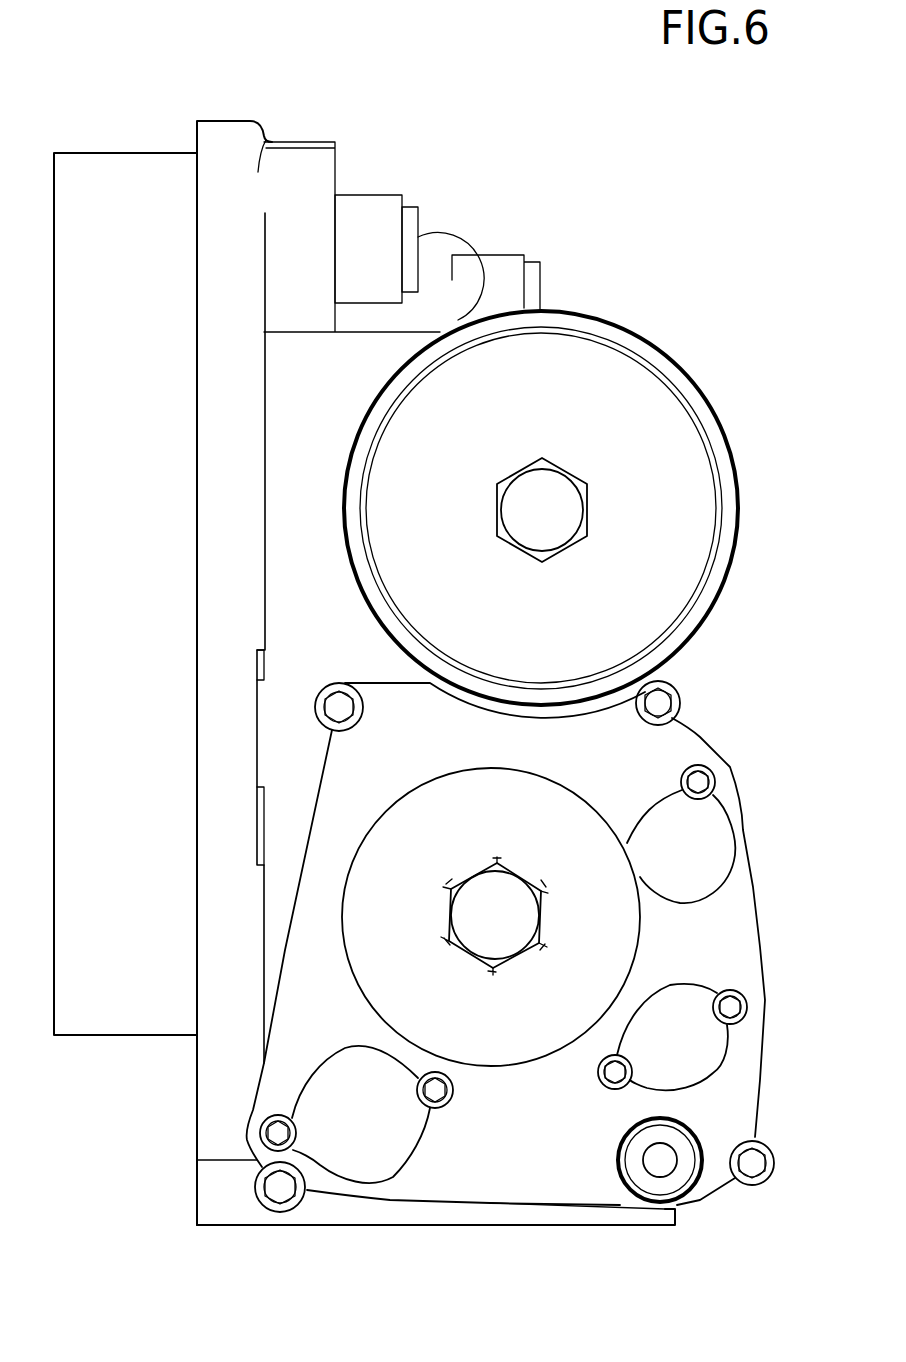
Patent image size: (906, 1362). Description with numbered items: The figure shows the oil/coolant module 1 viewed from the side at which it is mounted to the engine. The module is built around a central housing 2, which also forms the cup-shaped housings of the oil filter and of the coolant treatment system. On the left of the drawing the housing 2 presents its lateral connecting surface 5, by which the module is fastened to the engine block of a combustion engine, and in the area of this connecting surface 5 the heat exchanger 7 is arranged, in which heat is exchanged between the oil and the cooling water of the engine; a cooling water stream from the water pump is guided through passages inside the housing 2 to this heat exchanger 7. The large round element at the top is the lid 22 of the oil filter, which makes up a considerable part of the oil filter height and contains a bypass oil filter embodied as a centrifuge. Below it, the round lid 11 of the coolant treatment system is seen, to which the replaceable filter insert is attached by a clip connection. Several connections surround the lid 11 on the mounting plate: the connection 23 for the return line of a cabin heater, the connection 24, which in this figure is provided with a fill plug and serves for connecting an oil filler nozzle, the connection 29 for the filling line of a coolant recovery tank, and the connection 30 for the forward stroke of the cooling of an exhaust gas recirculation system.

The oil/coolant module 1 is at (150, 1220).
The central housing 2 is at (368, 370).
The lateral connecting surface 5 is at (197, 1090).
The heat exchanger 7 is at (137, 200).
The lid of the coolant treatment system 11 is at (488, 1022).
The lid of the oil filter 22 is at (585, 377).
The connection for the return line of a cabin heater 23 is at (680, 1057).
The connection for an oil filler nozzle 24 is at (705, 823).
The connection for the filling line of a coolant recovery tank 29 is at (643, 1173).
The connection for the forward stroke of exhaust gas recirculation cooling 30 is at (350, 1140).